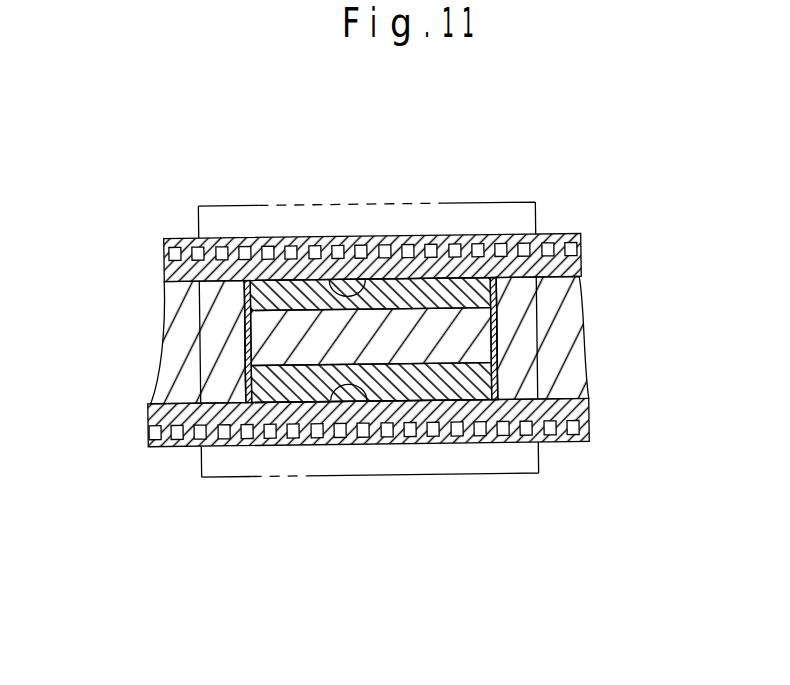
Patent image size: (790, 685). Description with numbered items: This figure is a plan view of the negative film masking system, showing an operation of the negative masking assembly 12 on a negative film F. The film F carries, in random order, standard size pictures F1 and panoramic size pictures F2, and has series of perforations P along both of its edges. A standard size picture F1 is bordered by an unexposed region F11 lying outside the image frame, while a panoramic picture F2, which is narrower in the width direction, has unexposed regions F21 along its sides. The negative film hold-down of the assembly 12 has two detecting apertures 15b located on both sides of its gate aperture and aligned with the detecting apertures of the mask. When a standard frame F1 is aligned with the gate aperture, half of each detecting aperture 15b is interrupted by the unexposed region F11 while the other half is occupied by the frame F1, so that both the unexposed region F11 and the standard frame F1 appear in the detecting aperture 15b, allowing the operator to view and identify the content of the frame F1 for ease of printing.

The negative film F is at (358, 367).
The standard size picture F1 is at (168, 375).
The unexposed region F11 is at (379, 357).
The panoramic size picture F2 is at (343, 391).
The unexposed region F21 is at (290, 286).
The perforations P is at (481, 252).
The detecting aperture 15b is at (346, 284).
The negative masking assembly 12 is at (244, 482).